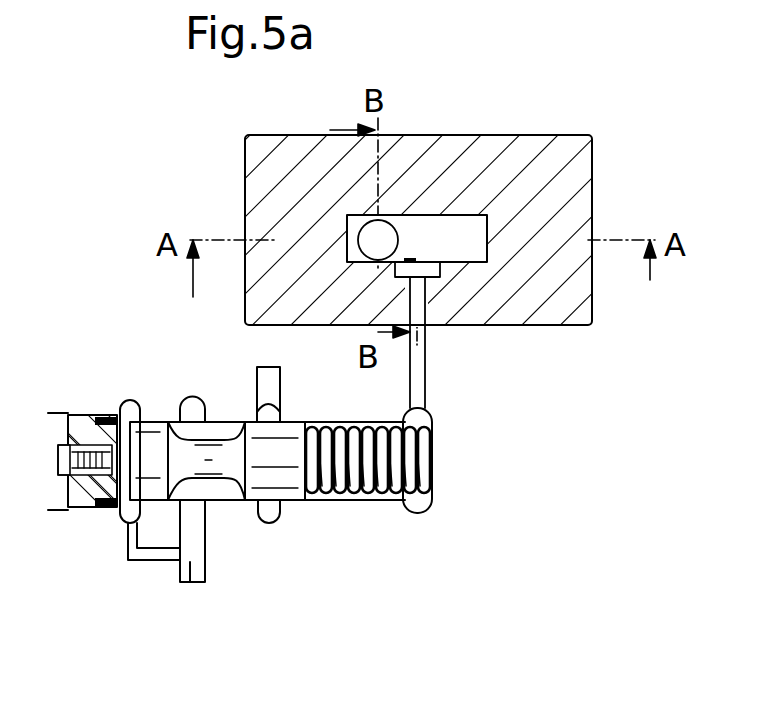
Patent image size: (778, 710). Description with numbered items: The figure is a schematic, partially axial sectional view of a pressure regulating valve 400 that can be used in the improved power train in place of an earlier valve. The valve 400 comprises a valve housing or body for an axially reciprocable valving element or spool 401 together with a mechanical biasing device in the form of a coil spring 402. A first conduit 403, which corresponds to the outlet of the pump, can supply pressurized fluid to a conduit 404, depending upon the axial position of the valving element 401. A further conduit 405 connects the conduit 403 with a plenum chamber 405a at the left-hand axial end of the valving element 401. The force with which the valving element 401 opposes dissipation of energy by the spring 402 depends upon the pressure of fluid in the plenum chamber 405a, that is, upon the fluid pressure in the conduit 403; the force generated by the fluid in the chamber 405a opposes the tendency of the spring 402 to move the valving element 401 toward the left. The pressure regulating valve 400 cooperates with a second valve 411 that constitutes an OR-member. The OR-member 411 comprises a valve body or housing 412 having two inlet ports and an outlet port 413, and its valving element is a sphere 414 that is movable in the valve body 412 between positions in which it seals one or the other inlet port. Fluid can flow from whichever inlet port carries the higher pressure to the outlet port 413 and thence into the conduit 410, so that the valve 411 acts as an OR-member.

The pressure regulating valve 400 is at (348, 523).
The valving element or spool 401 is at (283, 480).
The coil spring 402 is at (430, 460).
The first conduit 403 is at (190, 566).
The conduit 404 is at (267, 387).
The conduit 405 is at (137, 553).
The plenum chamber 405a is at (130, 513).
The conduit 410 is at (418, 362).
The second valve (OR-member) 411 is at (455, 228).
The valve body or housing 412 is at (500, 222).
The outlet port 413 is at (450, 278).
The sphere 414 is at (394, 226).